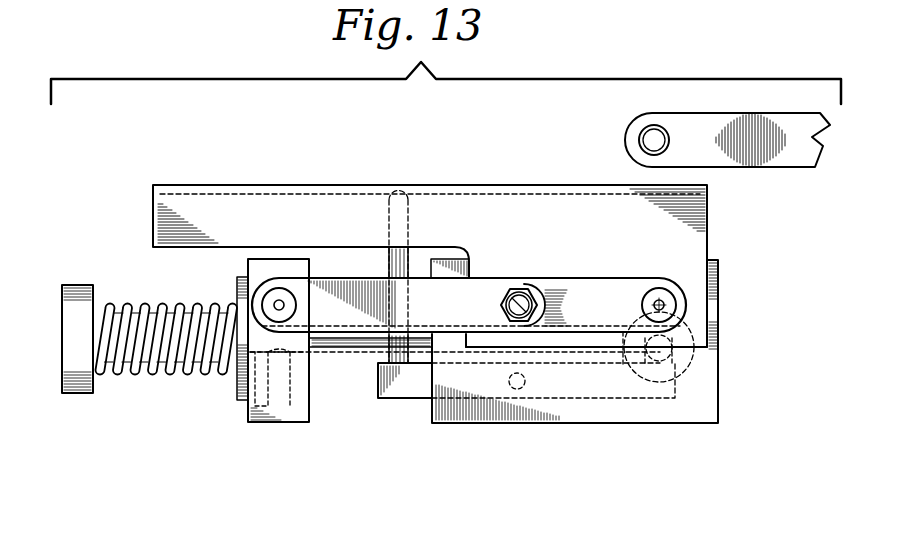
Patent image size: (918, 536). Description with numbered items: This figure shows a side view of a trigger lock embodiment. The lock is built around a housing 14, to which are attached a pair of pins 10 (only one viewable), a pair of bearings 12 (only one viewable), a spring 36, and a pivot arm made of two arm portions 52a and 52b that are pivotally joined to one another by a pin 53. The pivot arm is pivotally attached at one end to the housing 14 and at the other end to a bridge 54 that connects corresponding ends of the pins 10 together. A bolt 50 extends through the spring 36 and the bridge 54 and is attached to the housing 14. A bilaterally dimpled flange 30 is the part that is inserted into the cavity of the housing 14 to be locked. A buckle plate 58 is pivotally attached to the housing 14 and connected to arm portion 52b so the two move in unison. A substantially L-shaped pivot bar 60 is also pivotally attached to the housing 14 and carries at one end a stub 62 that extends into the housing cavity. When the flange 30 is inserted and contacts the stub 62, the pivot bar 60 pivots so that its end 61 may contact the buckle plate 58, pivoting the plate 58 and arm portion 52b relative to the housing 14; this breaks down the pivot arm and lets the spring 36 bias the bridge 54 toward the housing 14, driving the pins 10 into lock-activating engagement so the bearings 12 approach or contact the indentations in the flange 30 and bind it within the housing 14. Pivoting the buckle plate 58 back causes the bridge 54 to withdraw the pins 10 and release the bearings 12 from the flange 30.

The pin 10 is at (338, 343).
The bearing 12 is at (680, 362).
The housing 14 is at (693, 403).
The bilaterally dimpled flange 30 is at (792, 147).
The spring 36 is at (167, 375).
The bolt 50 is at (78, 357).
The arm portion 52a is at (378, 298).
The arm portion 52b is at (568, 300).
The pin 53 is at (507, 294).
The bridge 54 is at (255, 425).
The buckle plate 58 is at (160, 222).
The pivot bar 60 is at (407, 383).
The end 61 is at (405, 194).
The stub 62 is at (683, 332).